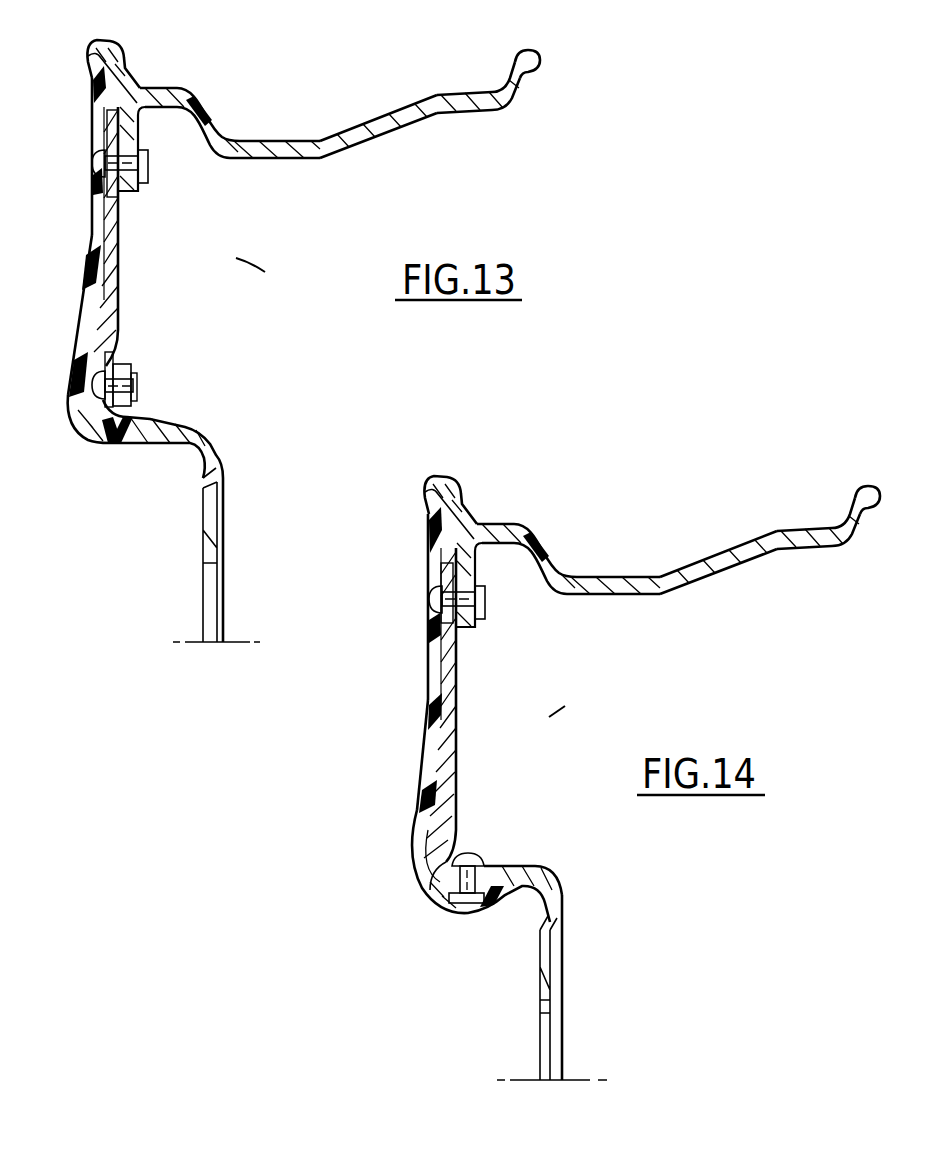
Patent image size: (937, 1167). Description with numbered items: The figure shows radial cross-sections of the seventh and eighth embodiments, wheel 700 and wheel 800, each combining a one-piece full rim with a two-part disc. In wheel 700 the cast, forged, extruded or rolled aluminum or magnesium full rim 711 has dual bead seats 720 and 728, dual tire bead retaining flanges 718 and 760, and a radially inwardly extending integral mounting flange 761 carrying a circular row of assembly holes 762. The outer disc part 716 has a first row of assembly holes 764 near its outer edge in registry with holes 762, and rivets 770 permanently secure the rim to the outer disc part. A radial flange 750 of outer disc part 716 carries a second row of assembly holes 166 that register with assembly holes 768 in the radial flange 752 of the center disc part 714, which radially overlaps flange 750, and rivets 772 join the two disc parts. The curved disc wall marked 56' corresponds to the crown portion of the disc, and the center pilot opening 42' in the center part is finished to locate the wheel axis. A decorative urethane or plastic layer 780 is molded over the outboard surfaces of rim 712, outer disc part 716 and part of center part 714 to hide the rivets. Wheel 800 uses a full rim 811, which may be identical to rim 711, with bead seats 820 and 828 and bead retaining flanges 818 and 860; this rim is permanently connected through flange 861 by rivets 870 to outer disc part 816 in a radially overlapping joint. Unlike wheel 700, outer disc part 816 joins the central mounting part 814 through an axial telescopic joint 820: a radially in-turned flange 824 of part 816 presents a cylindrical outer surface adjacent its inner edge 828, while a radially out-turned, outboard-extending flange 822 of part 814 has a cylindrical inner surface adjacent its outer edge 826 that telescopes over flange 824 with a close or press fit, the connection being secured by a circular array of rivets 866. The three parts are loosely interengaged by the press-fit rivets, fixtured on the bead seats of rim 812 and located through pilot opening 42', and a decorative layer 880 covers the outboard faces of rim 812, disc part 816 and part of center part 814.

In FIG. 13, the wheel 700 is at (235, 258).
In FIG. 13, the tire bead retaining flange 760 is at (100, 40).
In FIG. 13, the bead seat 728 is at (146, 86).
In FIG. 13, the full rim 711 is at (428, 92).
In FIG. 13, the bead seat 720 is at (471, 93).
In FIG. 13, the tire bead retaining flange 718 is at (533, 52).
In FIG. 13, the mounting flange 761 is at (140, 191).
In FIG. 13, the assembly holes 762 is at (146, 162).
In FIG. 13, the assembly holes 764 is at (108, 145).
In FIG. 13, the rivets 770 is at (97, 165).
In FIG. 13, the outer disc part 716 is at (122, 228).
In FIG. 13, the decorative layer 780 is at (92, 247).
In FIG. 13, the rim 712 is at (122, 292).
In FIG. 13, the wall portion 56' is at (61, 316).
In FIG. 14, the wall portion 56' is at (390, 881).
In FIG. 13, the plate 166 is at (107, 365).
In FIG. 13, the assembly holes 768 is at (133, 378).
In FIG. 13, the rivets 772 is at (93, 390).
In FIG. 13, the radial flange 752 is at (127, 417).
In FIG. 13, the radial flange 750 is at (88, 430).
In FIG. 13, the center disc part 714 is at (228, 457).
In FIG. 13, the center pilot opening 42' is at (206, 560).
In FIG. 14, the center pilot opening 42' is at (547, 987).
In FIG. 14, the wheel 800 is at (556, 714).
In FIG. 14, the outer lip 860 is at (462, 494).
In FIG. 14, the bead seat 828 is at (568, 724).
In FIG. 14, the full rim 811 is at (723, 537).
In FIG. 14, the telescopic joint 820 is at (627, 741).
In FIG. 14, the bead seat knob 818 is at (861, 475).
In FIG. 14, the flange 861 is at (504, 590).
In FIG. 14, the rivets 870 is at (424, 593).
In FIG. 14, the outer disc part 816 is at (467, 656).
In FIG. 14, the decorative layer 880 is at (427, 680).
In FIG. 14, the rim 812 is at (425, 853).
In FIG. 14, the in-turned flange 824 is at (420, 898).
In FIG. 14, the outer edge 826 is at (450, 864).
In FIG. 14, the rivets 866 is at (470, 907).
In FIG. 14, the out-turned flange 822 is at (520, 866).
In FIG. 14, the central mounting part 814 is at (572, 893).